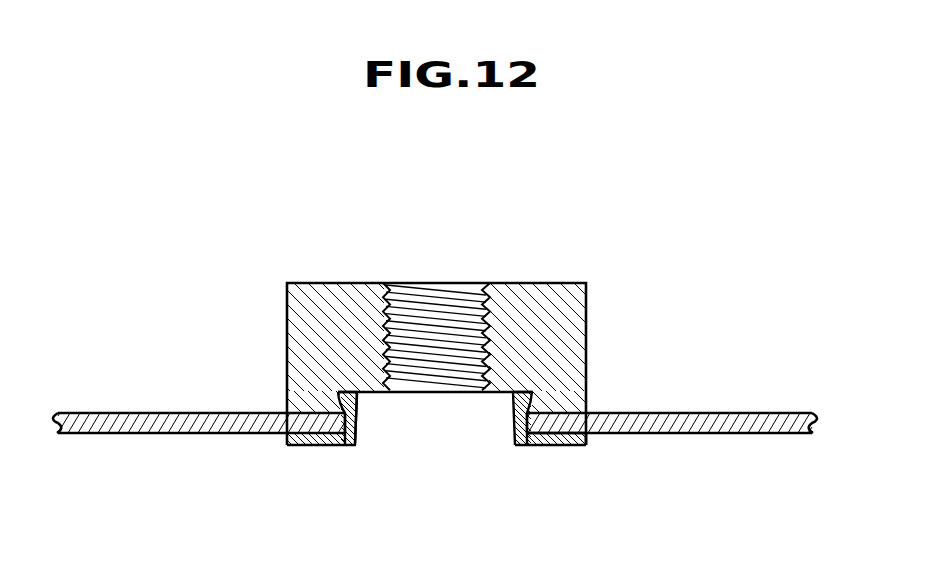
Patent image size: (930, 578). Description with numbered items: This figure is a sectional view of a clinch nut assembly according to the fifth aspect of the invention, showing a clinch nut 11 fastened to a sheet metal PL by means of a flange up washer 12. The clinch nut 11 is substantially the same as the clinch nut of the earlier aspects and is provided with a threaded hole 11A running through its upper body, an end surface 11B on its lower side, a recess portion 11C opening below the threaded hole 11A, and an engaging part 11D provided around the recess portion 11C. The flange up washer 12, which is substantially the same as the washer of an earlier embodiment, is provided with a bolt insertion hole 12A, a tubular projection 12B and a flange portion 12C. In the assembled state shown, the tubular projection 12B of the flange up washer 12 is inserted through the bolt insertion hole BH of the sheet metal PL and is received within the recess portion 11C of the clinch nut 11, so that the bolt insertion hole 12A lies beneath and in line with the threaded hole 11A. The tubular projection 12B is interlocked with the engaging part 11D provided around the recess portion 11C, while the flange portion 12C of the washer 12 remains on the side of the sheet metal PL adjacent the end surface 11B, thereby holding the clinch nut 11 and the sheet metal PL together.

The clinch nut 11 is at (613, 305).
The threaded hole 11A is at (438, 314).
The end surface 11B is at (577, 436).
The recess portion 11C is at (505, 392).
The engaging part 11D is at (533, 407).
The flange up washer 12 is at (314, 446).
The bolt insertion hole 12A is at (358, 416).
The tubular projection 12B is at (346, 392).
The flange portion 12C is at (548, 446).
The bolt insertion hole BH is at (358, 422).
The sheet metal PL is at (772, 425).